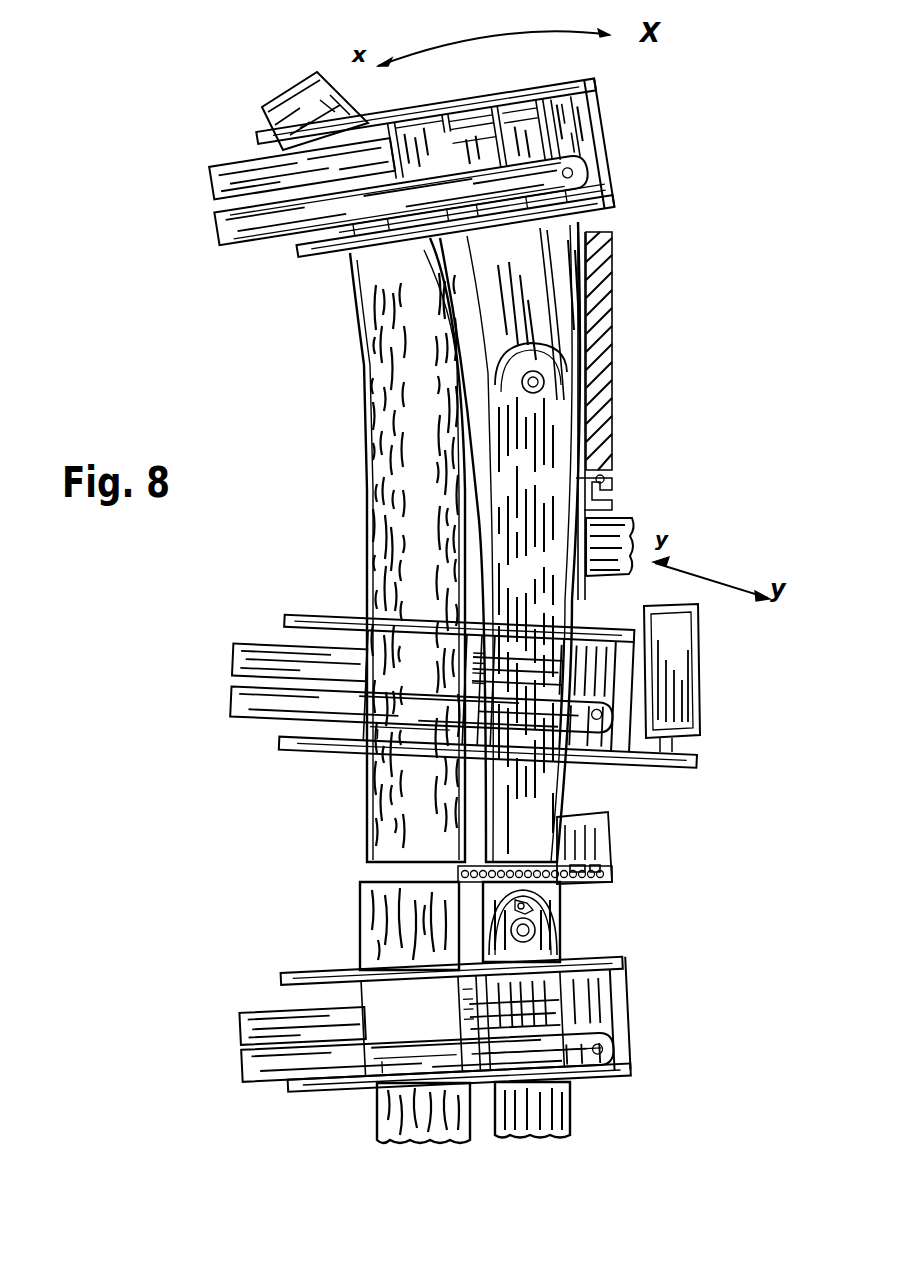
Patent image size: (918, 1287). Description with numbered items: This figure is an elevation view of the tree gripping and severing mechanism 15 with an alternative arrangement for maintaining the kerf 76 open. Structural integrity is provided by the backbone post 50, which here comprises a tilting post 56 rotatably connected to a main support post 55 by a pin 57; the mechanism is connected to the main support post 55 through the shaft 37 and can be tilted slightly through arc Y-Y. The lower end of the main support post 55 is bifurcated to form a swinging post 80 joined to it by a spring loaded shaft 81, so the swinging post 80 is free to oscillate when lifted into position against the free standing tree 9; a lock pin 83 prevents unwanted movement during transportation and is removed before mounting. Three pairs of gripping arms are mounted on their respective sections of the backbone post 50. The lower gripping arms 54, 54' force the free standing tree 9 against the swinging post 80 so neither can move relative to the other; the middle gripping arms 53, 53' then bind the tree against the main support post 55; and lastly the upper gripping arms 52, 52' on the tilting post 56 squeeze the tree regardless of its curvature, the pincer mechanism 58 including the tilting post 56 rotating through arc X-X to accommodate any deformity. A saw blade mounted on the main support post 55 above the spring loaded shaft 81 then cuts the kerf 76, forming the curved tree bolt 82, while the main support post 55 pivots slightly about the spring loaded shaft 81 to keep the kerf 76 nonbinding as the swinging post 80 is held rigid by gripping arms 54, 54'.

The free standing tree 9 is at (382, 1124).
The tree gripping and severing mechanism 15 is at (352, 546).
The shaft 37 is at (612, 528).
The backbone post 50 is at (556, 788).
The gripping arm 52 is at (380, 215).
The gripping arm 52' is at (260, 170).
The gripping arm 53 is at (367, 709).
The gripping arm 53' is at (343, 667).
The gripping arm 54 is at (381, 1056).
The gripping arm 54' is at (353, 1021).
The main support post 55 is at (545, 504).
The tilting post 56 is at (528, 262).
The pin 57 is at (548, 382).
The pincer mechanism 58 is at (190, 214).
The kerf 76 is at (372, 862).
The swinging post 80 is at (556, 1118).
The spring loaded shaft 81 is at (536, 931).
The curved tree bolt 82 is at (372, 488).
The lock pin 83 is at (532, 907).